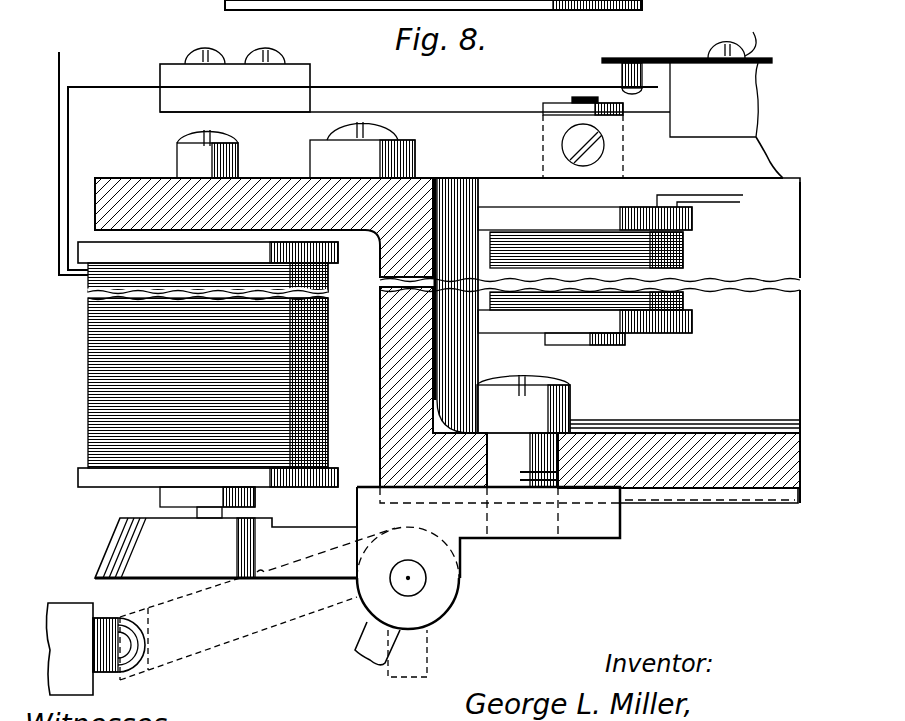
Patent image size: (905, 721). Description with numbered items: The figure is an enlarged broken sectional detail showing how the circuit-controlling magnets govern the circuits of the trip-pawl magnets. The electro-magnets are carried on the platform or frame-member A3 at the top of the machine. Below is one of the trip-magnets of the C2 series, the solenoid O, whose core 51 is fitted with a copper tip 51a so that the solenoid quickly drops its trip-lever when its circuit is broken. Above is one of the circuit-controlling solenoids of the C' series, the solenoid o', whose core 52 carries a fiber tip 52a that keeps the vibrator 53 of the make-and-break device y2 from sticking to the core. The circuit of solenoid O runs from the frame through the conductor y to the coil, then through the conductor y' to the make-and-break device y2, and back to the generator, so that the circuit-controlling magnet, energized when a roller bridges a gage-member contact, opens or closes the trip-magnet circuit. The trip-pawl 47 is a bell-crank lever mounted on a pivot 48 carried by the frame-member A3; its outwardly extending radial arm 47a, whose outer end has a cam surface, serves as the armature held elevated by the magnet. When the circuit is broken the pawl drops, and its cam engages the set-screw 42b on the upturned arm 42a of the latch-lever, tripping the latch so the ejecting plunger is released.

The conductor y is at (65, 143).
The conductor y' is at (114, 158).
The make-and-break device y2 is at (642, 87).
The vibrator 53 is at (480, 86).
The core 52 is at (549, 108).
The fiber tip 52a is at (574, 96).
The solenoid o' is at (610, 231).
The circuit-controlling solenoids C' is at (585, 335).
The platform or frame-member A3 is at (716, 437).
The solenoid O is at (208, 365).
The trip-magnets C2 is at (189, 364).
The core 51 is at (160, 495).
The copper tip 51a is at (205, 510).
The trip-pawl 47 is at (296, 558).
The radial arm 47a is at (118, 530).
The pivot 48 is at (437, 580).
The upturned arm 42a is at (62, 606).
The set-screw 42b is at (138, 638).